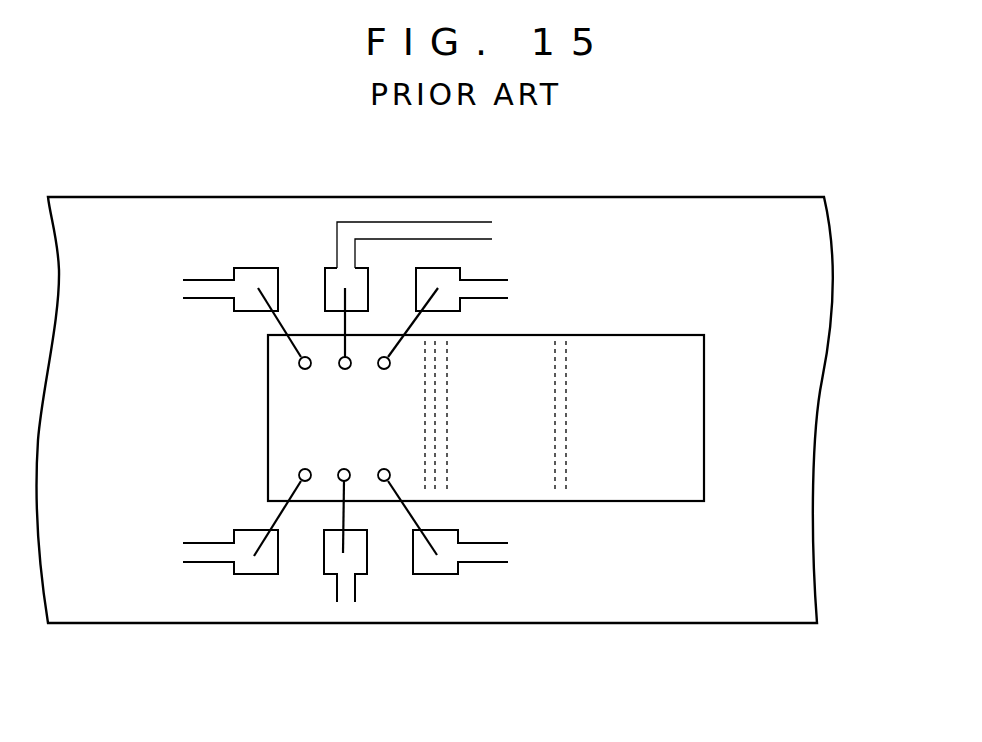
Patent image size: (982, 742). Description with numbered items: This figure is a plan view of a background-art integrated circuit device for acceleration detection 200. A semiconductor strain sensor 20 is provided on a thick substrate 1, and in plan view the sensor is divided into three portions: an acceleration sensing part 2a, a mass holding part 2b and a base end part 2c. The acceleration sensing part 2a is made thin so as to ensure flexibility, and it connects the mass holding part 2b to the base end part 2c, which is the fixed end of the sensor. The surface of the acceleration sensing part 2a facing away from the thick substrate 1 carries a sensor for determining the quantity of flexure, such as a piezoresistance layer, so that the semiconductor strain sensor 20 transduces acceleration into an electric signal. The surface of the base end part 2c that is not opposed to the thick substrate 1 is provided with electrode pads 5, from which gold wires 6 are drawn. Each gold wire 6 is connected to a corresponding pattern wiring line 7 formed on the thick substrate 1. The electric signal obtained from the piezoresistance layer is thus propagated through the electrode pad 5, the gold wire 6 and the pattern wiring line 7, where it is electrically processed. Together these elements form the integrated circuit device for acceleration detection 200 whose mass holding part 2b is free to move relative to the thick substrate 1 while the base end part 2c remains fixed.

The thick substrate 1 is at (724, 248).
The acceleration sensing part 2a is at (505, 421).
The mass holding part 2b is at (625, 428).
The base end part 2c is at (341, 419).
The electrode pad 5 is at (298, 368).
The gold wire 6 is at (277, 322).
The pattern wiring line 7 is at (437, 230).
The semiconductor strain sensor 20 is at (574, 511).
The integrated circuit device for acceleration detection 200 is at (135, 633).